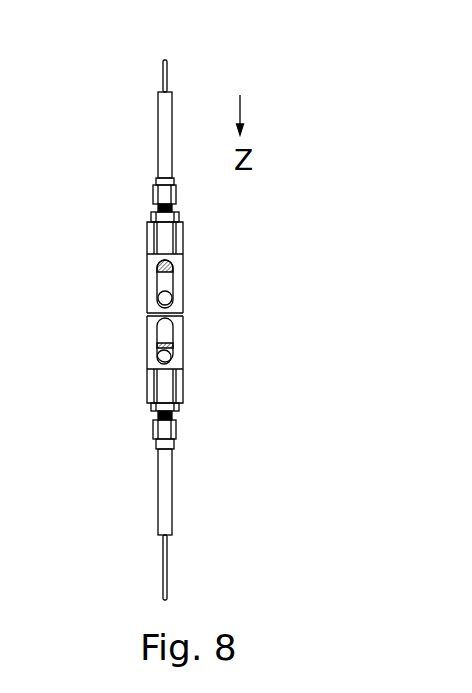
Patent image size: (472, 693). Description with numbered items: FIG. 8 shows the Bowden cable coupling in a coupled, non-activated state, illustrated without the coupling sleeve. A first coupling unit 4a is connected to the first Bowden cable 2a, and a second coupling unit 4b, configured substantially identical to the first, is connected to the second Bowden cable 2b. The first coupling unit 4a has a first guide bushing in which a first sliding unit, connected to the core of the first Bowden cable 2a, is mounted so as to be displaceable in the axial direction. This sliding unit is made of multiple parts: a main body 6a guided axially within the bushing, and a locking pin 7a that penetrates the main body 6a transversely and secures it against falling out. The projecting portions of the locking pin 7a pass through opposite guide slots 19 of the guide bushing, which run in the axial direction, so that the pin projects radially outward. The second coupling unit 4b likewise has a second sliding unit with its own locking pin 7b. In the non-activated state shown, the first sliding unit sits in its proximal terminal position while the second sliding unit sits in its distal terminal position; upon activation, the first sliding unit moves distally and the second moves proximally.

The first Bowden cable 2a is at (125, 74).
The second Bowden cable 2b is at (127, 540).
The first coupling unit 4a is at (120, 236).
The second coupling unit 4b is at (119, 379).
The main body 6a is at (165, 277).
The locking pin 7a is at (166, 298).
The locking pin 7b is at (165, 357).
The guide slots 19 is at (185, 272).